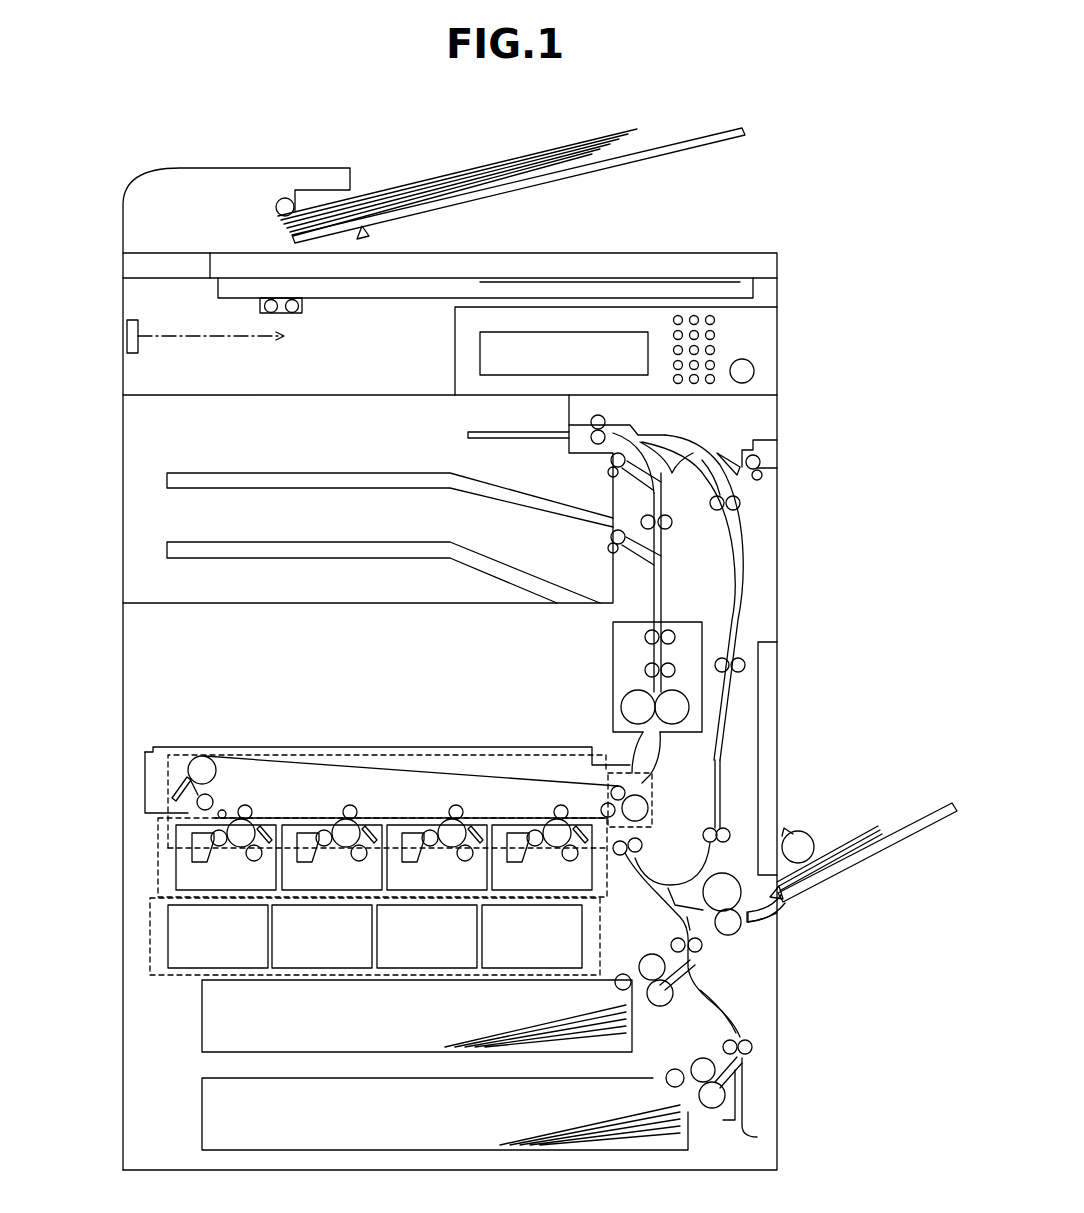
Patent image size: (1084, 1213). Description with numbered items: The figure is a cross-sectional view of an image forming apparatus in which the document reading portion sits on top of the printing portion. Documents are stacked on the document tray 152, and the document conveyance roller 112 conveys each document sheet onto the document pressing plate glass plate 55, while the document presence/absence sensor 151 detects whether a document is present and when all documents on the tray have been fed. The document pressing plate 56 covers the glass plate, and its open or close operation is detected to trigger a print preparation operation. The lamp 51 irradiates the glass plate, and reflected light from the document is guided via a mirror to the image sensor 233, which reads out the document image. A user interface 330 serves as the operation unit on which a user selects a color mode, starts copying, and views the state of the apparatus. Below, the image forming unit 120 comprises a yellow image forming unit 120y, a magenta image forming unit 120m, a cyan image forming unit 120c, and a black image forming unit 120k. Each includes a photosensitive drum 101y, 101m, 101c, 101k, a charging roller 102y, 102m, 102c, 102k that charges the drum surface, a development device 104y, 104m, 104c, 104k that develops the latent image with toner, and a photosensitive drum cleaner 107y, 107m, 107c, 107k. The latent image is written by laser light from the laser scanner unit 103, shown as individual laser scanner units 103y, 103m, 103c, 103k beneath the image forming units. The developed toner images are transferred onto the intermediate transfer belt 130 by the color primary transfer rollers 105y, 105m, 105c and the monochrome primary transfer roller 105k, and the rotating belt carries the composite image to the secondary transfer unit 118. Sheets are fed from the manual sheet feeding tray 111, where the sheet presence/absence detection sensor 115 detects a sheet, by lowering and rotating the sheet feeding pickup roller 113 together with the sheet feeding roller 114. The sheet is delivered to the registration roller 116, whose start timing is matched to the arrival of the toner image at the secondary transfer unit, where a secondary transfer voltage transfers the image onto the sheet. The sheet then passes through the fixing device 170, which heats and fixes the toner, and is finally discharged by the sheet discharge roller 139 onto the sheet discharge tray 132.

The document tray 152 is at (700, 138).
The document conveyance roller 112 is at (276, 207).
The document presence/absence sensor 151 is at (371, 237).
The document pressing plate glass plate 55 is at (640, 284).
The document pressing plate 56 is at (722, 253).
The lamp 51 is at (305, 307).
The image sensor 233 is at (140, 349).
The user interface 330 is at (777, 344).
The sheet discharge tray 132 is at (482, 556).
The sheet discharge roller 139 is at (610, 538).
The fixing device 170 is at (686, 622).
The intermediate transfer belt 130 is at (387, 797).
The image forming unit 120 is at (158, 838).
The yellow image forming unit 120y is at (188, 873).
The magenta image forming unit 120m is at (283, 890).
The cyan image forming unit 120c is at (388, 890).
The black image forming unit 120k is at (635, 925).
The photosensitive drum 101y is at (231, 822).
The photosensitive drum 101m is at (336, 822).
The photosensitive drum 101c is at (442, 822).
The photosensitive drum 101k is at (547, 822).
The charging roller 102y is at (204, 864).
The charging roller 102m is at (309, 864).
The charging roller 102c is at (414, 864).
The charging roller 102k is at (519, 864).
The laser scanner unit 103 is at (150, 940).
The laser scanner unit 103y is at (180, 970).
The laser scanner unit 103m is at (308, 970).
The laser scanner unit 103c is at (438, 970).
The laser scanner unit 103k is at (512, 972).
The development device 104y is at (252, 862).
The development device 104m is at (357, 862).
The development device 104c is at (463, 862).
The development device 104k is at (568, 862).
The color primary transfer roller 105y is at (244, 805).
The color primary transfer roller 105m is at (349, 805).
The color primary transfer roller 105c is at (455, 805).
The monochrome primary transfer roller 105k is at (560, 805).
The photosensitive drum cleaner 107y is at (258, 828).
The photosensitive drum cleaner 107m is at (364, 828).
The photosensitive drum cleaner 107c is at (470, 828).
The photosensitive drum cleaner 107k is at (575, 828).
The secondary transfer unit 118 is at (652, 792).
The registration roller 116 is at (643, 847).
The sheet feeding roller 114 is at (722, 936).
The sheet presence/absence detection sensor 115 is at (785, 905).
The sheet feeding pickup roller 113 is at (800, 831).
The manual sheet feeding tray 111 is at (926, 815).